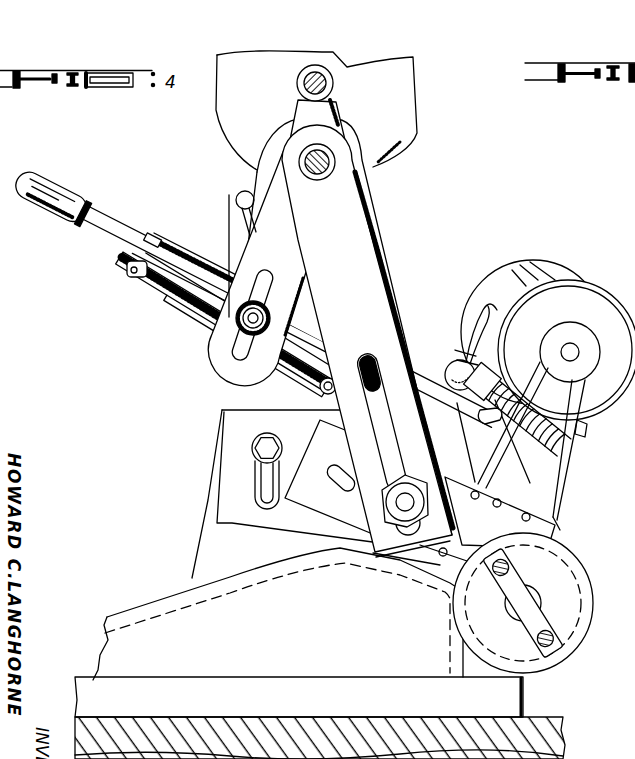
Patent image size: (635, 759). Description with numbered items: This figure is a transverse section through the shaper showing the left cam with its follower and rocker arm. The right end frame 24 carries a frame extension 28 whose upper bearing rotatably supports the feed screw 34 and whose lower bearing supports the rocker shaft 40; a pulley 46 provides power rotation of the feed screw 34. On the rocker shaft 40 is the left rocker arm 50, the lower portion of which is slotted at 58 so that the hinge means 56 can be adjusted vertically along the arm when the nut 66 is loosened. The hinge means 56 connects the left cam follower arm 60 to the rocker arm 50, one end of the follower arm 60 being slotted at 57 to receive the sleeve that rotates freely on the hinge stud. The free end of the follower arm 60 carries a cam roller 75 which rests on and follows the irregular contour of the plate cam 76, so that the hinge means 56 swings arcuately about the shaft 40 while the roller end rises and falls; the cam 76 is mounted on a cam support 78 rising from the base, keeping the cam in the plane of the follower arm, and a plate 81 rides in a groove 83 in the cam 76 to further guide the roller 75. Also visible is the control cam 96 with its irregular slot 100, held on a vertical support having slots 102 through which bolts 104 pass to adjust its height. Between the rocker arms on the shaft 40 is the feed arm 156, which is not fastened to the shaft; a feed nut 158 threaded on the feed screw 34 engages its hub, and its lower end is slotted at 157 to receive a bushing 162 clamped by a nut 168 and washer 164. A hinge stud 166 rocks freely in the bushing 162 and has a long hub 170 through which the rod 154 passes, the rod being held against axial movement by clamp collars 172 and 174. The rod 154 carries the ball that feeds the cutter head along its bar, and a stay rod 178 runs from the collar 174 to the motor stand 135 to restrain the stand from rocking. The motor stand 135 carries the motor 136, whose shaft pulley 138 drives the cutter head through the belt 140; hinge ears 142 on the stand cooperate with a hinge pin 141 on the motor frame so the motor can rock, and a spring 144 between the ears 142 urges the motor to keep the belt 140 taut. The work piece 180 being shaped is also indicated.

The right end frame 24 is at (213, 514).
The frame extension 28 is at (372, 191).
The feed screw 34 is at (333, 82).
The rocker shaft 40 is at (325, 178).
The pulley 46 is at (412, 96).
The left rocker arm 50 is at (390, 250).
The hinge means 56 is at (435, 508).
The slot 57 is at (351, 480).
The slot 58 is at (376, 358).
The left cam follower arm 60 is at (549, 528).
The nut 66 is at (393, 520).
The cam roller 75 is at (596, 581).
The plate cam 76 is at (150, 612).
The cam support 78 is at (163, 685).
The plate 81 is at (580, 562).
The groove 83 is at (232, 607).
The control cam 96 is at (240, 197).
The irregular slot 100 is at (240, 213).
The slots 102 is at (268, 505).
The bolts 104 is at (270, 440).
The motor stand 135 is at (528, 482).
The motor 136 is at (530, 262).
The pulley 138 is at (583, 305).
The belt 140 is at (568, 472).
The hinge pin 141 is at (456, 363).
The hinge ears 142 is at (587, 434).
The spring 144 is at (548, 436).
The rod 154 is at (115, 228).
The feed arm 156 is at (250, 250).
The slot 157 is at (226, 363).
The feed nut 158 is at (340, 110).
The bushing 162 is at (406, 467).
The washer 164 is at (270, 366).
The hinge stud 166 is at (236, 321).
The nut 168 is at (243, 327).
The long hub 170 is at (167, 274).
The clamp collar 172 is at (322, 390).
The clamp collar 174 is at (127, 268).
The stay rod 178 is at (372, 362).
The work piece 180 is at (212, 553).